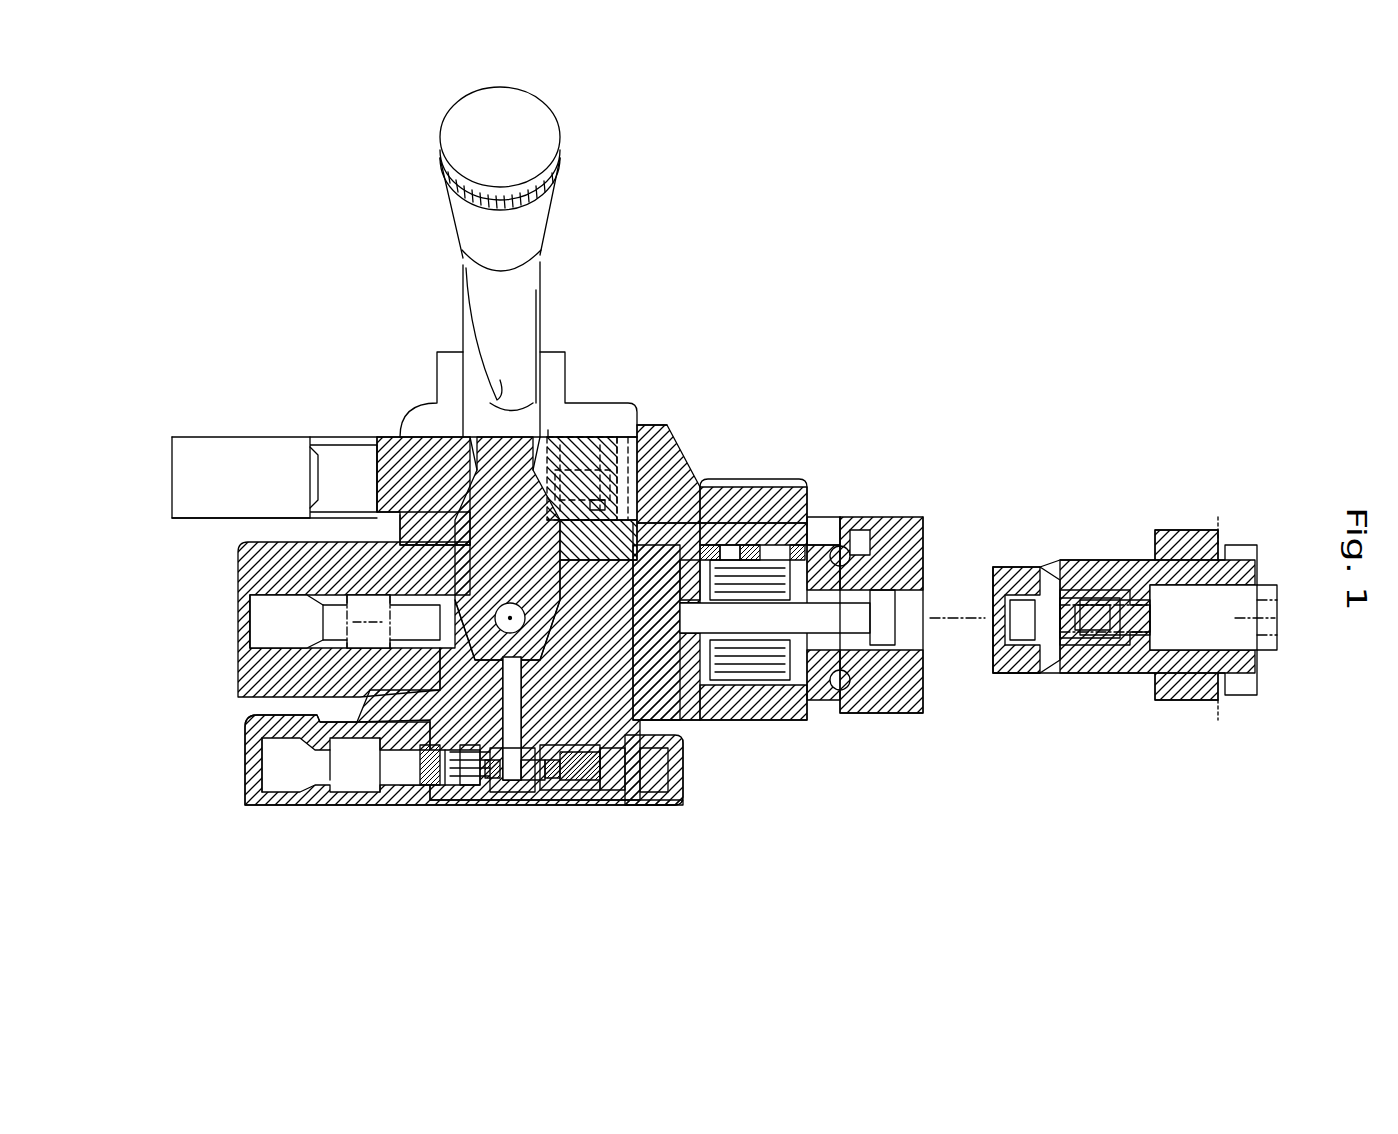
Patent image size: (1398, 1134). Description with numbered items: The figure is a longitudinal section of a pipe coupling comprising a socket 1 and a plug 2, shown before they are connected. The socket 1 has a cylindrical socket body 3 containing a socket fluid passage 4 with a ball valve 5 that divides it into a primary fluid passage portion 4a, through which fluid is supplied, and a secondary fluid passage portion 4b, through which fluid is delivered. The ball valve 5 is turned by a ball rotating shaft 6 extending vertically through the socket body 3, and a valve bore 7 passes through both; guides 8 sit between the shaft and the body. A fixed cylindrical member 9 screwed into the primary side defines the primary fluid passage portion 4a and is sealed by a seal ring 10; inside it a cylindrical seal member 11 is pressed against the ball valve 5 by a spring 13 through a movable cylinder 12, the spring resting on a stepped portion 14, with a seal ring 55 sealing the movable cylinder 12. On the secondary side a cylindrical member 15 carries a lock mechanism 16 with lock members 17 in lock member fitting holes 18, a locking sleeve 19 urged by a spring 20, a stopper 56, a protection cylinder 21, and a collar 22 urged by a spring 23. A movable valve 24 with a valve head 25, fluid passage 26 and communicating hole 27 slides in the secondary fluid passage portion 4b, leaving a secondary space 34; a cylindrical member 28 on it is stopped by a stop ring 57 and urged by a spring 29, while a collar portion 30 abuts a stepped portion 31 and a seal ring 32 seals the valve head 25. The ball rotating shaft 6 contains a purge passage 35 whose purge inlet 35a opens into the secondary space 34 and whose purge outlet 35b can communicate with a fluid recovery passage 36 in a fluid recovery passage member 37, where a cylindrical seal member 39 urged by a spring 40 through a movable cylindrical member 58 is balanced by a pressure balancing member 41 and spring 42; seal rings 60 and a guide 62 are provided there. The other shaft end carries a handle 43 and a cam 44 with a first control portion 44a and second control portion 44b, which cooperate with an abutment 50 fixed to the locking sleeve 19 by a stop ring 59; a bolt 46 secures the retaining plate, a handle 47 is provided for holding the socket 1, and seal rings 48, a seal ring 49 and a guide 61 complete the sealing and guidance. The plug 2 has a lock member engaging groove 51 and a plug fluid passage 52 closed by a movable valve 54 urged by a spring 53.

The socket 1 is at (405, 352).
The plug 2 is at (1093, 548).
The socket body 3 is at (470, 520).
The socket fluid passage 4 is at (355, 560).
The primary fluid passage portion 4a is at (245, 505).
The secondary fluid passage portion 4b is at (600, 785).
The ball valve 5 is at (540, 790).
The ball rotating shaft 6 is at (437, 420).
The valve bore 7 is at (465, 340).
The guides 8 is at (598, 500).
The fixed cylindrical member 9 is at (238, 562).
The seal ring 10 is at (415, 520).
The cylindrical seal member 11 is at (375, 600).
The movable cylinder 12 is at (337, 800).
The spring 13 is at (345, 600).
The stepped portion 14 is at (290, 600).
The cylindrical member 15 is at (705, 720).
The lock mechanism 16 is at (780, 740).
The lock members 17 is at (830, 690).
The lock member fitting holes 18 is at (865, 648).
The locking sleeve 19 is at (835, 535).
The spring 20 is at (780, 545).
The protection cylinder 21 is at (898, 525).
The collar 22 is at (828, 700).
The spring 23 is at (757, 715).
The movable valve 24 is at (745, 545).
The valve head 25 is at (648, 480).
The fluid passage 26 is at (870, 620).
The communicating hole 27 is at (712, 545).
The cylindrical member 28 is at (820, 540).
The spring 29 is at (735, 545).
The collar portion 30 is at (688, 487).
The stepped portion 31 is at (700, 545).
The seal ring 32 is at (725, 487).
The secondary space 34 is at (622, 440).
The purge passage 35 is at (548, 800).
The purge inlet 35a is at (388, 795).
The purge outlet 35b is at (515, 800).
The fluid recovery passage 36 is at (322, 800).
The fluid recovery passage member 37 is at (470, 800).
The cylindrical seal member 39 is at (500, 800).
The spring 40 is at (425, 800).
The pressure balancing member 41 is at (560, 800).
The spring 42 is at (655, 800).
The handle 43 is at (548, 265).
The cam 44 is at (555, 420).
The first control portion 44a is at (395, 360).
The second control portion 44b is at (640, 420).
The bolt 46 is at (570, 420).
The handle 47 is at (205, 462).
The seal rings 48 is at (500, 380).
The seal ring 49 is at (548, 430).
The abutment 50 is at (668, 440).
The lock member engaging groove 51 is at (1042, 572).
The plug fluid passage 52 is at (1095, 648).
The spring 53 is at (1072, 650).
The movable valve 54 is at (1030, 655).
The seal ring 55 is at (355, 800).
The stopper 56 is at (865, 525).
The stop ring 57 is at (880, 600).
The movable cylindrical member 58 is at (445, 800).
The stop ring 59 is at (818, 545).
The seal rings 60 is at (493, 800).
The guide 61 is at (580, 400).
The guide 62 is at (565, 805).